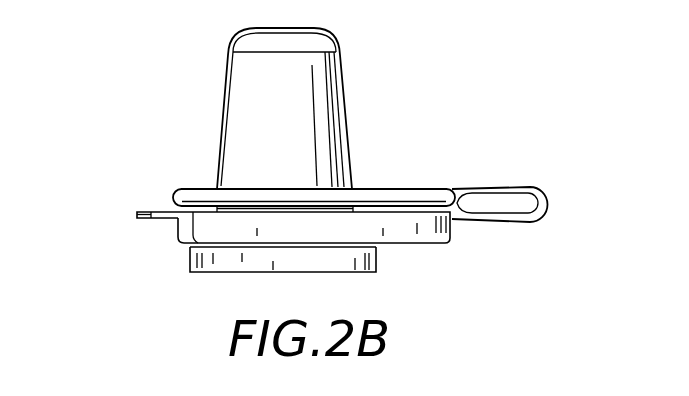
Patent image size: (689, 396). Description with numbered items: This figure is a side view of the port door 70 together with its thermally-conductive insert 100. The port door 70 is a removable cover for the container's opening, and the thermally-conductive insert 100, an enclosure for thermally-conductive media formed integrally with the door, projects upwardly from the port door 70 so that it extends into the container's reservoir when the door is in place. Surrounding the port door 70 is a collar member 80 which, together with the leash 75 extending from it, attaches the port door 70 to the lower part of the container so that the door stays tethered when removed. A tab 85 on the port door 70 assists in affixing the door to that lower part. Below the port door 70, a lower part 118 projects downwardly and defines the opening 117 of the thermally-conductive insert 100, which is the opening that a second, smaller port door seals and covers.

The thermally-conductive insert 100 is at (333, 118).
The collar member 80 is at (394, 198).
The leash 75 is at (518, 191).
The tab 85 is at (158, 212).
The port door 70 is at (425, 228).
The lower part 118 is at (191, 253).
The opening 117 is at (212, 273).